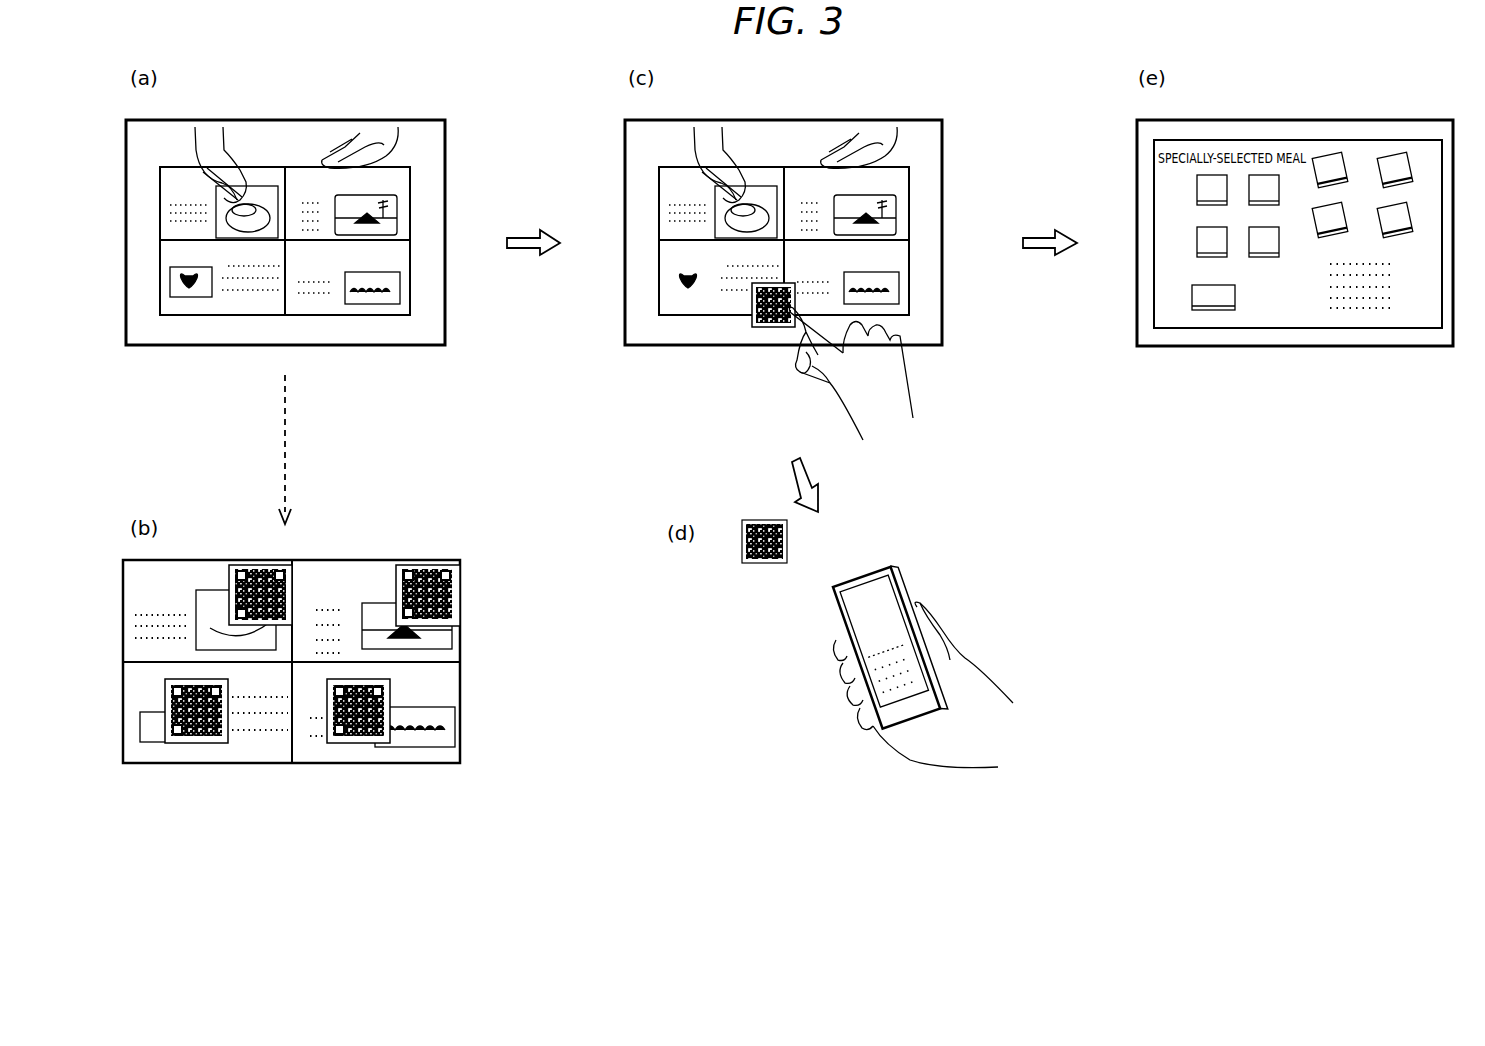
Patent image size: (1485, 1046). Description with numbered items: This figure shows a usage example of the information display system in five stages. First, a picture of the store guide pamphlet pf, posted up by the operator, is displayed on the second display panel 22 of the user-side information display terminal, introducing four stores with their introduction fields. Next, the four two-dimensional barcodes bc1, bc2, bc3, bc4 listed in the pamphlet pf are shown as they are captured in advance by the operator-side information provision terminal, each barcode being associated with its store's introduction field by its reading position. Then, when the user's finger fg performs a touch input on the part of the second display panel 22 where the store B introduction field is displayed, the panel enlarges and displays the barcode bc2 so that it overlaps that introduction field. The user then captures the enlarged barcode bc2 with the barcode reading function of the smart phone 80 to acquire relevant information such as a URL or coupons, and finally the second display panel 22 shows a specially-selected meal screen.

The second display panel 22 is at (432, 158).
The pamphlet pf is at (270, 167).
The finger fg is at (805, 325).
The 2D barcode bc1 is at (263, 570).
The 2D barcode bc2 is at (197, 737).
The 2D barcode bc3 is at (418, 570).
The 2D barcode bc4 is at (352, 737).
The smart phone 80 is at (907, 583).